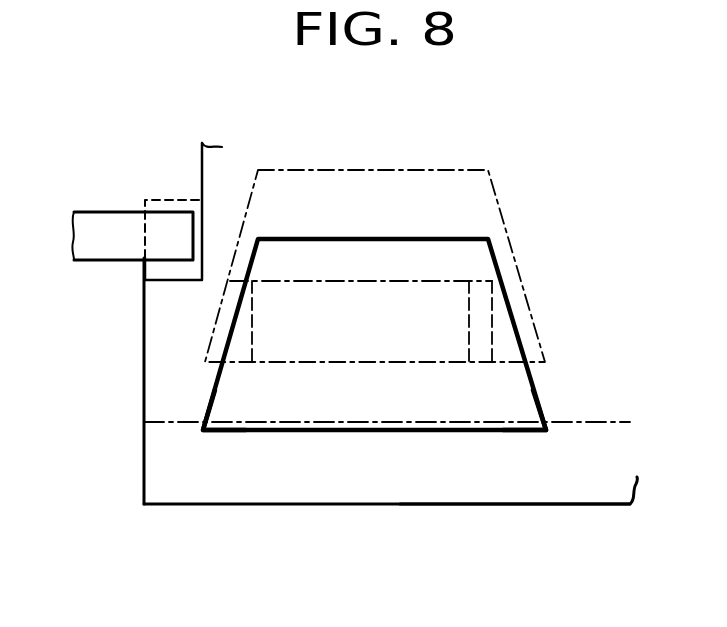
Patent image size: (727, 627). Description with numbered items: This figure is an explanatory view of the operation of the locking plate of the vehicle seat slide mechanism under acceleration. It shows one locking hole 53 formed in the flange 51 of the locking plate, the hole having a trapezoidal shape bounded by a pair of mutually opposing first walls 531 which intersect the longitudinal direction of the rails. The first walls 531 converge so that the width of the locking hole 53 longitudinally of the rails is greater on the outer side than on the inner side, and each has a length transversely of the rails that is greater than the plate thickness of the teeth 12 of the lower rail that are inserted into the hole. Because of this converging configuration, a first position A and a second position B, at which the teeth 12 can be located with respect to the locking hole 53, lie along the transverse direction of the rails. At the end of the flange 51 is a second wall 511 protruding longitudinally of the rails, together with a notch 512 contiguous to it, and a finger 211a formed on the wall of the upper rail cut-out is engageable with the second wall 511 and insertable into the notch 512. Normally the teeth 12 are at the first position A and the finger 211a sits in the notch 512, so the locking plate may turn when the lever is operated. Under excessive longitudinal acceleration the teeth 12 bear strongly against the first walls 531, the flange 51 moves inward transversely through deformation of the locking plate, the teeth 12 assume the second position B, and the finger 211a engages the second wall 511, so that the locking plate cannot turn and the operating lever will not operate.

The teeth 12 is at (350, 307).
The locking hole 53 is at (338, 402).
The first walls 531 is at (215, 393).
The flange 51 is at (387, 468).
The second wall 511 is at (165, 462).
The notch 512 is at (201, 236).
The finger 211a is at (167, 227).
The first position A is at (563, 507).
The second position B is at (575, 422).